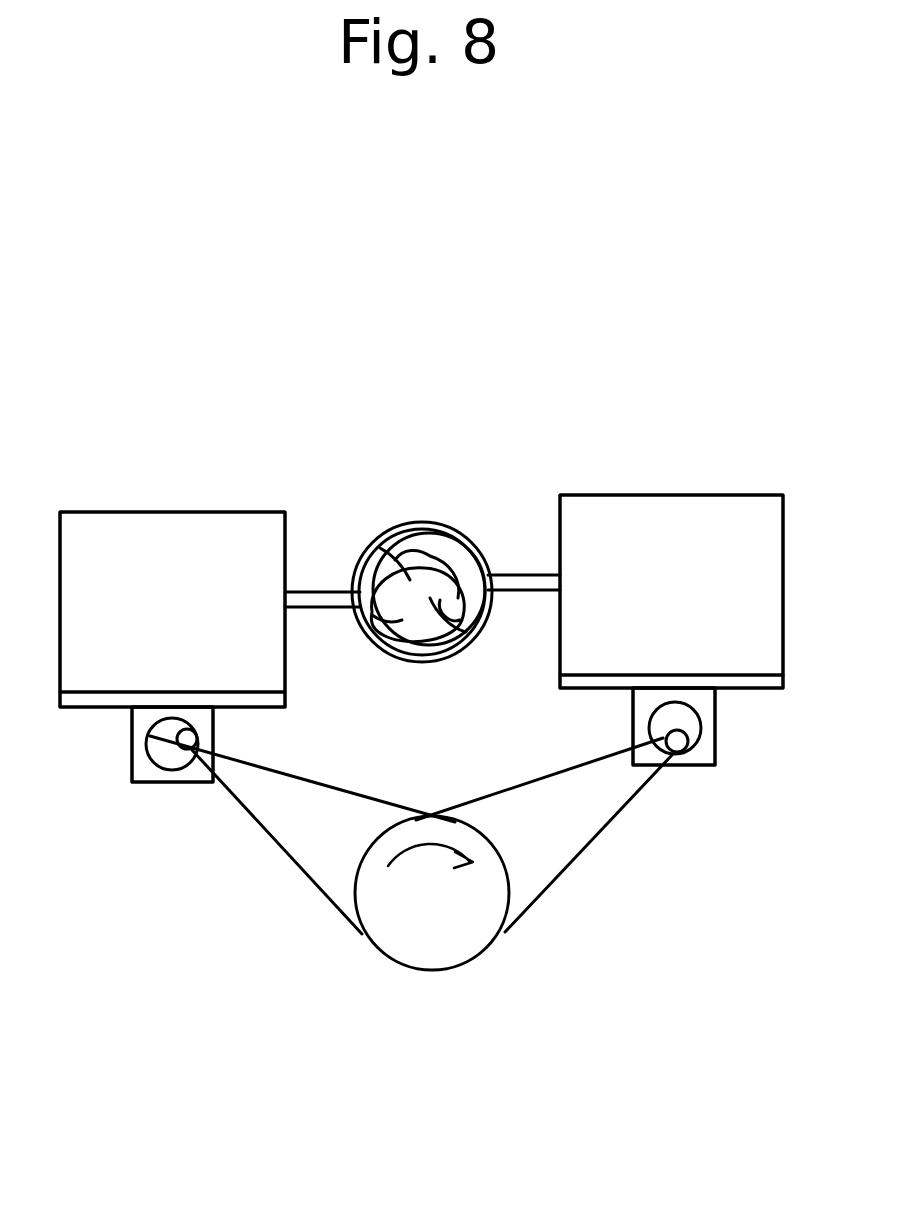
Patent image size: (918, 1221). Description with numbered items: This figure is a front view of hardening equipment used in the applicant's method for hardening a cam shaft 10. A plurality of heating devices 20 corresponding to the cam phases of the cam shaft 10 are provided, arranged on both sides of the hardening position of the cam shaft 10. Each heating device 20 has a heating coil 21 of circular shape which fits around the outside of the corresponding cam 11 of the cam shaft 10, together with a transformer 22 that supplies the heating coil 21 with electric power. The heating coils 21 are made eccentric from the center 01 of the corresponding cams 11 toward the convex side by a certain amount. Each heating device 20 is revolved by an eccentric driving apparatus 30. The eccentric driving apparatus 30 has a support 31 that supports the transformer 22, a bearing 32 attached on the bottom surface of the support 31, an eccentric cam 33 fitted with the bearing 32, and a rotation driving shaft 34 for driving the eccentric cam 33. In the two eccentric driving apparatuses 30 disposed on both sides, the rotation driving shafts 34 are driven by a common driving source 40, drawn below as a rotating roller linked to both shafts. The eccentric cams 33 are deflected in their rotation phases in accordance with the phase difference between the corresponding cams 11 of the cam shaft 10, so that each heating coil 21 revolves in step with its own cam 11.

The cam shaft 10 is at (440, 522).
The cam 11 is at (380, 549).
The heating coil 21 is at (476, 541).
The center of the cam 01 is at (470, 634).
The heating device 20 is at (181, 484).
The transformer 22 is at (93, 534).
The eccentric driving apparatus 30 is at (140, 855).
The support 31 is at (73, 708).
The bearing 32 is at (143, 785).
The eccentric cam 33 is at (187, 785).
The rotation driving shaft 34 is at (150, 736).
The common driving source 40 is at (432, 955).